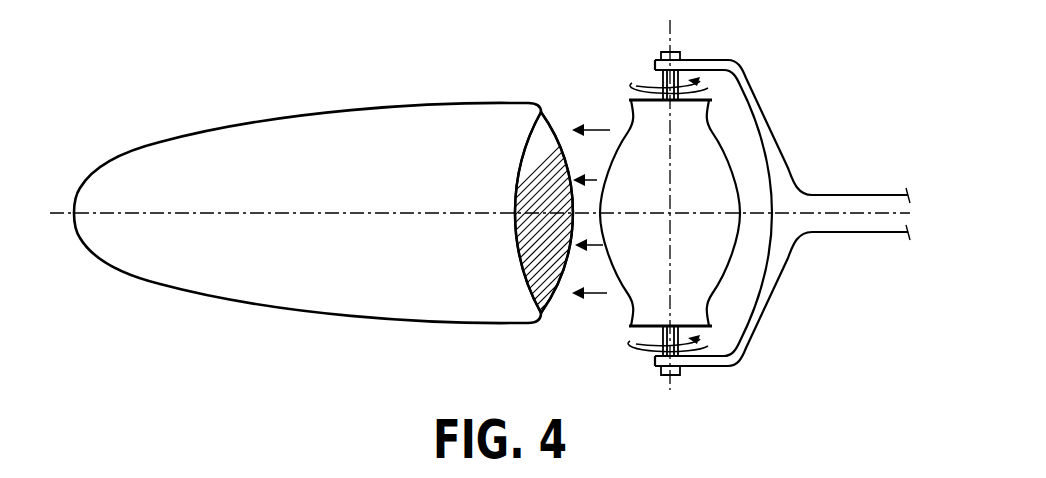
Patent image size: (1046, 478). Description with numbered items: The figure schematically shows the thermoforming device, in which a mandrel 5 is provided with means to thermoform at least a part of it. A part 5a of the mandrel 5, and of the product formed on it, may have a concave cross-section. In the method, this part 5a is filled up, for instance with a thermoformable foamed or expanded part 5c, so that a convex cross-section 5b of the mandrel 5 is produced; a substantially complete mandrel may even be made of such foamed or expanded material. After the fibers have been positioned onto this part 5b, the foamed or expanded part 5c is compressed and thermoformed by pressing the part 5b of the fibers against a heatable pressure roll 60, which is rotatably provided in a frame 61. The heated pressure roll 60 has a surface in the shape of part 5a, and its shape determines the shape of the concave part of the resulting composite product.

The mandrel 5 is at (390, 116).
The part of the mandrel with concave cross-section 5a is at (517, 169).
The convex cross-section 5b is at (558, 290).
The thermoformable foamed or expanded part 5c is at (545, 240).
The heatable pressure roll 60 is at (703, 153).
The frame 61 is at (777, 155).